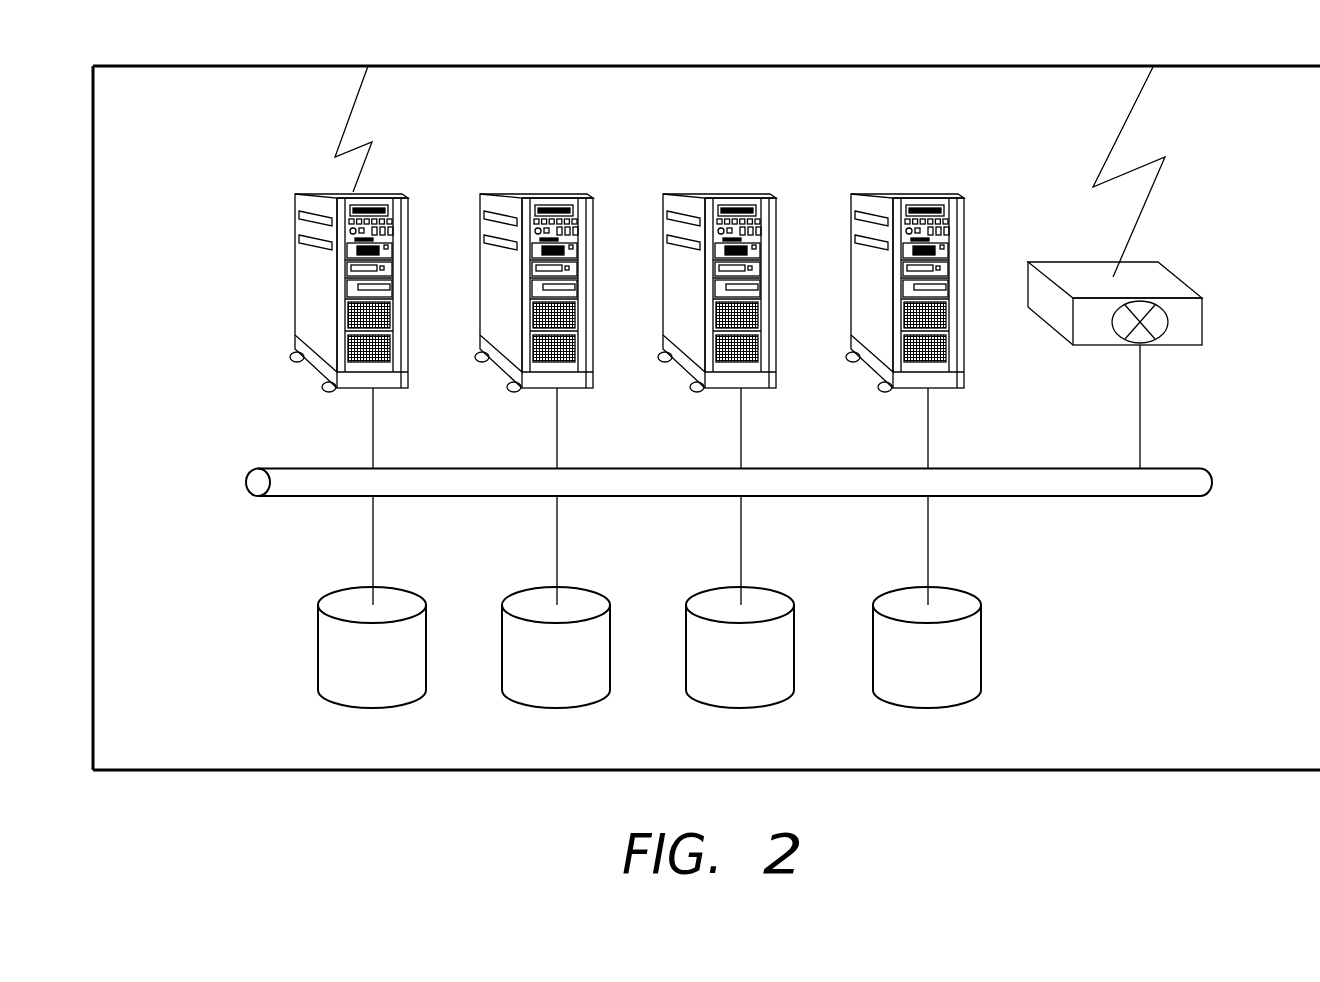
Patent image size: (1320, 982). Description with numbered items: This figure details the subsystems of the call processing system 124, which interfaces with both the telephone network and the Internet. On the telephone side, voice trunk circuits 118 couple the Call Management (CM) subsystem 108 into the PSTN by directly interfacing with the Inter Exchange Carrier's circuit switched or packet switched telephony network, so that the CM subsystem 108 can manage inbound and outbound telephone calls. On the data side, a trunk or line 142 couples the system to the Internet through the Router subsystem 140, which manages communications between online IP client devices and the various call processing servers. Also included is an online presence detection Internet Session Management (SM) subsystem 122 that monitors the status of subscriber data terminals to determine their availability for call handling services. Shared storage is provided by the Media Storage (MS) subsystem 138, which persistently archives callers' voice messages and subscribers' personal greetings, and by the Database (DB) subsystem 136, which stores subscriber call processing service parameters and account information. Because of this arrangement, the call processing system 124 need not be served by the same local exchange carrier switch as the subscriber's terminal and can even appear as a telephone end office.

The call processing system 124 is at (623, 66).
The voice trunk circuits 118 is at (373, 107).
The trunk or line 142 is at (1133, 113).
The Call Management (CM) subsystem 108 is at (317, 273).
The Internet Session Management (SM) subsystem 122 is at (958, 333).
The Router subsystem 140 is at (1203, 313).
The Media Storage (MS) subsystem 138 is at (332, 642).
The Database (DB) subsystem 136 is at (963, 653).